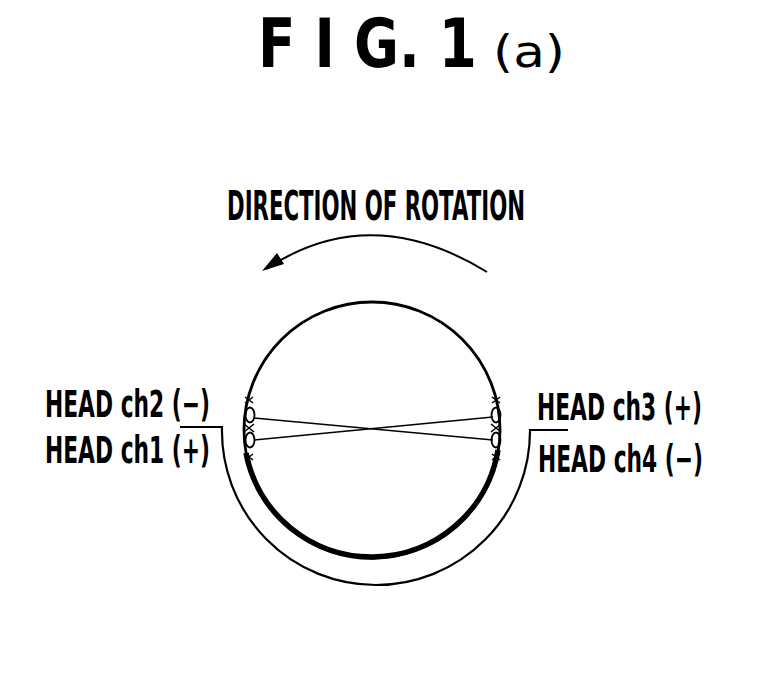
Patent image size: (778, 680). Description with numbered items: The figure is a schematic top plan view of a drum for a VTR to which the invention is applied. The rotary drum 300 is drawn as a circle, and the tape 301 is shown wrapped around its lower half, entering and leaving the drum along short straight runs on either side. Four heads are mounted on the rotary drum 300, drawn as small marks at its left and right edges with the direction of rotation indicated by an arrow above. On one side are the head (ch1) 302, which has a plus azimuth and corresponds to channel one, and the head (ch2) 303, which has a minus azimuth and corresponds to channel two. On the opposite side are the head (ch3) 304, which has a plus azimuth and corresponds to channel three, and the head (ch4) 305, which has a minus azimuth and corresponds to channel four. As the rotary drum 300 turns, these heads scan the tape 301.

The rotary drum 300 is at (450, 322).
The tape 301 is at (370, 585).
The head (ch1) 302 is at (257, 453).
The head (ch2) 303 is at (257, 407).
The head (ch3) 304 is at (494, 396).
The head (ch4) 305 is at (492, 462).